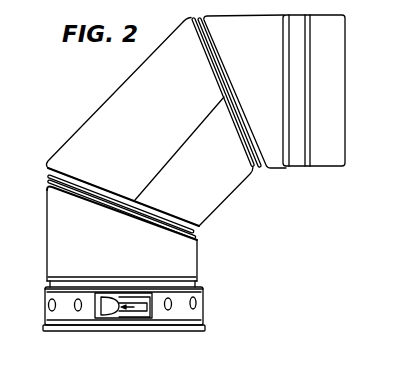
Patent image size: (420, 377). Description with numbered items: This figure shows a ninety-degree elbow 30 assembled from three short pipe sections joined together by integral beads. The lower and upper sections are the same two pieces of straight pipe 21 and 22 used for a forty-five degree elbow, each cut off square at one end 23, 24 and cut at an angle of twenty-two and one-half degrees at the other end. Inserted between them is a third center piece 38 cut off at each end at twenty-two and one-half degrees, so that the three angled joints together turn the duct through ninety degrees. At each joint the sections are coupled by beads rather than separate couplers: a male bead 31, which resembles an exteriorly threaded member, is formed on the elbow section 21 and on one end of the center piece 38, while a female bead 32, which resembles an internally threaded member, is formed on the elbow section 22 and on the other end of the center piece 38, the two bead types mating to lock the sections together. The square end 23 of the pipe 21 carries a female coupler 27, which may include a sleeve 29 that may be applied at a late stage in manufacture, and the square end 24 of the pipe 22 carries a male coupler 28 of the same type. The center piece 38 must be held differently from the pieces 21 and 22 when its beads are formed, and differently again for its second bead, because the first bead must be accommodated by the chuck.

The pipe 21 is at (101, 258).
The pipe 22 is at (264, 58).
The end 23 is at (118, 332).
The end 24 is at (348, 88).
The female coupler 27 is at (203, 292).
The male coupler 28 is at (326, 150).
The sleeve 29 is at (196, 314).
The ninety-degree elbow 30 is at (70, 138).
The male bead 31 is at (242, 142).
The female bead 32 is at (234, 110).
The center piece 38 is at (171, 115).